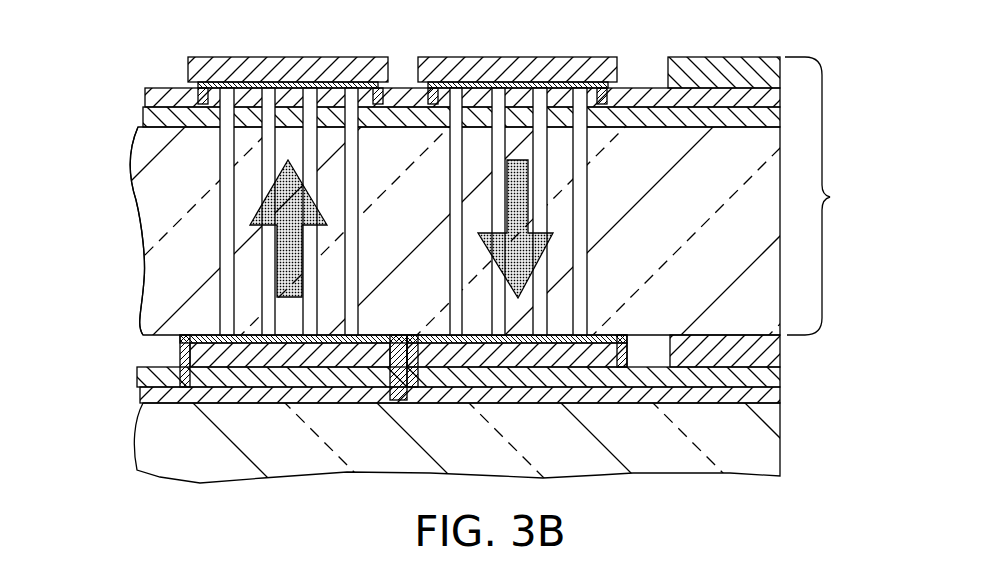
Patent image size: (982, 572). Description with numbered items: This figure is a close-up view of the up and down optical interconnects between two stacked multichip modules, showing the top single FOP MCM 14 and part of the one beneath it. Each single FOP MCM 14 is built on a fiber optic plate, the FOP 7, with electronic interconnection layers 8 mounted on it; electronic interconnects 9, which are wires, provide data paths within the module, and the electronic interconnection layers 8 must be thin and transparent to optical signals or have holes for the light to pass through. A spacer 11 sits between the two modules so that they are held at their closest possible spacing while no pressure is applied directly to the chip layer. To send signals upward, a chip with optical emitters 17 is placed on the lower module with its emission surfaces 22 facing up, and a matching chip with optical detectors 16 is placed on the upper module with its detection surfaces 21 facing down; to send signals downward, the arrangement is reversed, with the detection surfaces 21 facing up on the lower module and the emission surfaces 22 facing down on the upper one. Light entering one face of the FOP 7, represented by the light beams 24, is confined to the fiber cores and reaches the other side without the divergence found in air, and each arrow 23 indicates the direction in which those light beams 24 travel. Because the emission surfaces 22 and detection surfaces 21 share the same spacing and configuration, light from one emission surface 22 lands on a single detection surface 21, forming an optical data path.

The FOP 7 is at (734, 244).
The electronic interconnection layers 8 is at (768, 395).
The electronic interconnects 9 is at (152, 101).
The spacer 11 is at (743, 78).
The single FOP MCM 14 is at (836, 186).
The optical detectors 16 is at (377, 66).
The optical emitters 17 is at (520, 64).
The detection surfaces 21 is at (226, 86).
The emission surfaces 22 is at (456, 86).
The arrow 23 is at (303, 218).
The light beams 24 is at (226, 165).